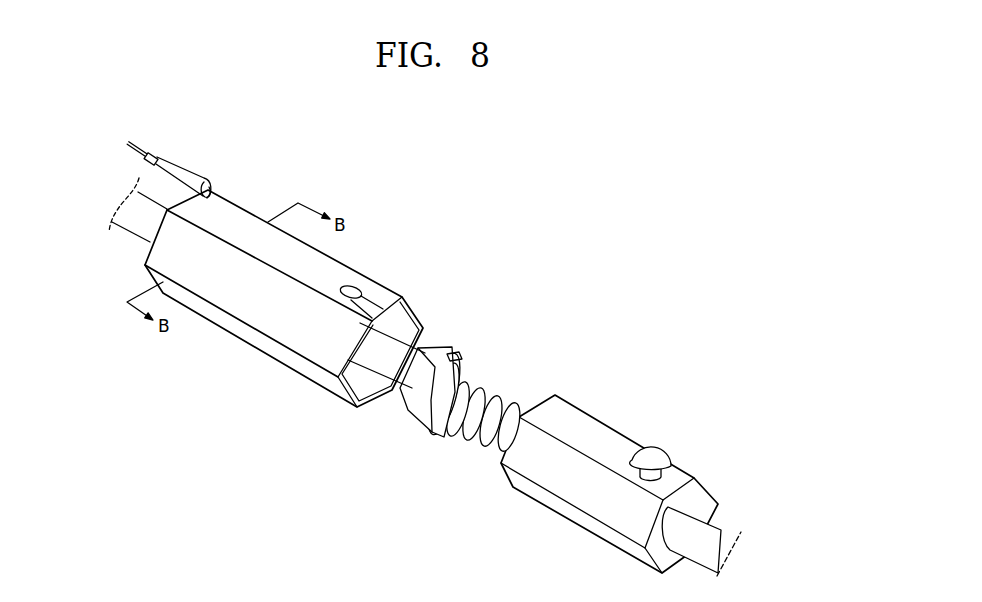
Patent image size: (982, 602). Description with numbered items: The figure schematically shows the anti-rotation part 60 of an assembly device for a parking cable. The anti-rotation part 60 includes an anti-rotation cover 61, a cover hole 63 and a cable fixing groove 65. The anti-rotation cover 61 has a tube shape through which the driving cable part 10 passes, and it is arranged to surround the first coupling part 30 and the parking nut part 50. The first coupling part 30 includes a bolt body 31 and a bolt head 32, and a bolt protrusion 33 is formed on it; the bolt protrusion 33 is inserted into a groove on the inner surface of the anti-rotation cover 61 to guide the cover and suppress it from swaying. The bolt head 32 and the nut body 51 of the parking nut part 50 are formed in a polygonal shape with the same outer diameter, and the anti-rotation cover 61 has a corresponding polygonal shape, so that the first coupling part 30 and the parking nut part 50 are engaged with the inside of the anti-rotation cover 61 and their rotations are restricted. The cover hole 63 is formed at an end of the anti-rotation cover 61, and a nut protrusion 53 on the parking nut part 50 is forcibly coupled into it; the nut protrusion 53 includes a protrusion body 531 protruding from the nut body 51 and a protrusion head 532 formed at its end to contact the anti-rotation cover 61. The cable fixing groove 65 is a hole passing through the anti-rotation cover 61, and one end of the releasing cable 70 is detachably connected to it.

The driving cable part 10 is at (155, 195).
The first coupling part 30 is at (461, 336).
The bolt body 31 is at (527, 408).
The bolt head 32 is at (480, 367).
The bolt protrusion 33 is at (453, 352).
The parking nut part 50 is at (628, 430).
The nut body 51 is at (597, 432).
The nut protrusion 53 is at (693, 379).
The protrusion body 531 is at (686, 482).
The protrusion head 532 is at (648, 452).
The anti-rotation part 60 is at (284, 269).
The anti-rotation cover 61 is at (250, 233).
The cover hole 63 is at (349, 287).
The cable fixing groove 65 is at (209, 182).
The releasing cable 70 is at (136, 146).